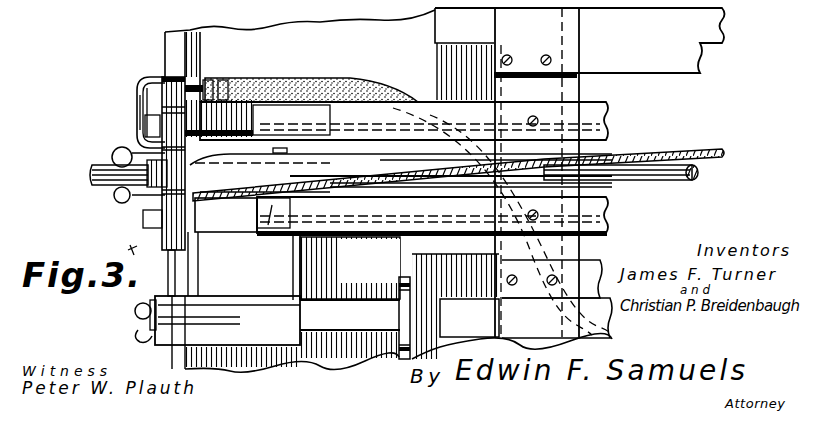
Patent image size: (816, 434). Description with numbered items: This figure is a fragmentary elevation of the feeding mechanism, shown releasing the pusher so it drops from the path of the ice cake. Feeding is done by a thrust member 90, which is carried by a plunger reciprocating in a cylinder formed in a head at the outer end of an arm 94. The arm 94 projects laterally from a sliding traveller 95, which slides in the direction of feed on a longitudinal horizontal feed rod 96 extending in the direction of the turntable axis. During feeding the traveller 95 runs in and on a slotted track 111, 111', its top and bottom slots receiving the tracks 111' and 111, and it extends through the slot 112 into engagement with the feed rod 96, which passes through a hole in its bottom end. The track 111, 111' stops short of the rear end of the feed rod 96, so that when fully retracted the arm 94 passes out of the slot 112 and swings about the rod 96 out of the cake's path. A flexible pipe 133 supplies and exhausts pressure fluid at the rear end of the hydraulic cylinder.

The thrust member 90 is at (409, 285).
The arm 94 is at (284, 262).
The sliding traveller 95 is at (250, 235).
The feed rod 96 is at (672, 168).
The track 111 is at (401, 215).
The track 111' is at (498, 196).
The slot 112 is at (594, 133).
The flexible pipe 133 is at (331, 47).